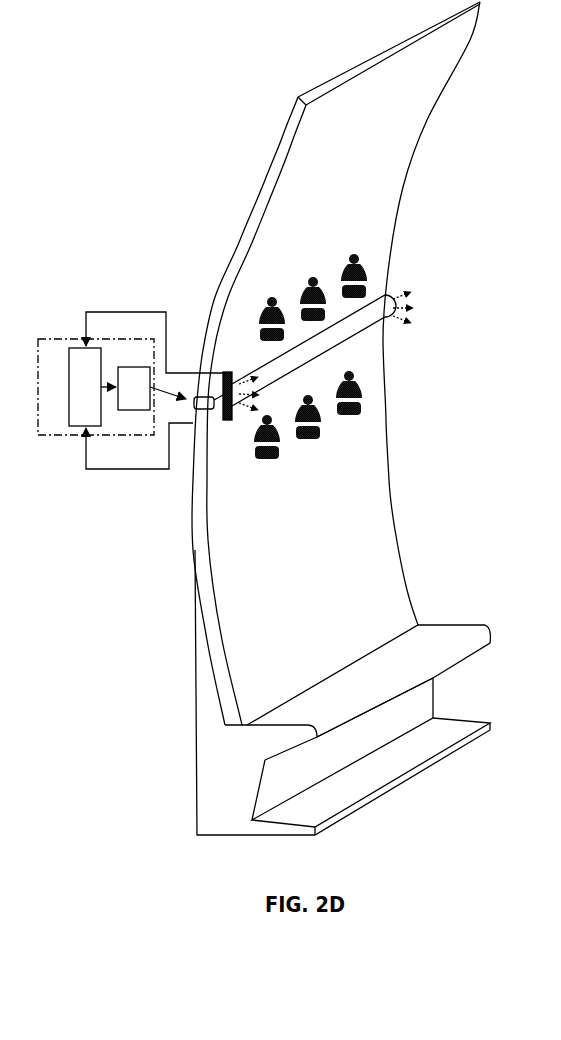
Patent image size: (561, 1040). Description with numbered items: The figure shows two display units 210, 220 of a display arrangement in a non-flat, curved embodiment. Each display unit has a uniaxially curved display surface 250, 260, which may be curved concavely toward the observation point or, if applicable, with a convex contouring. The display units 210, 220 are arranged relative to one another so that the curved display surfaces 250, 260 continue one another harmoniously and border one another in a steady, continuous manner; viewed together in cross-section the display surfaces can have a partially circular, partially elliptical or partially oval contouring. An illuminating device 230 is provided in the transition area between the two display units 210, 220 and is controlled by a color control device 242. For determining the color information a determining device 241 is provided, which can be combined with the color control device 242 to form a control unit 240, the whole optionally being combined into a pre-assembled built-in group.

The display unit 210 is at (249, 218).
The display unit 220 is at (205, 574).
The illuminating device 230 is at (388, 295).
The control unit 240 is at (131, 390).
The determining device 241 is at (85, 387).
The color control device 242 is at (143, 388).
The display surface 250 is at (418, 116).
The display surface 260 is at (392, 553).